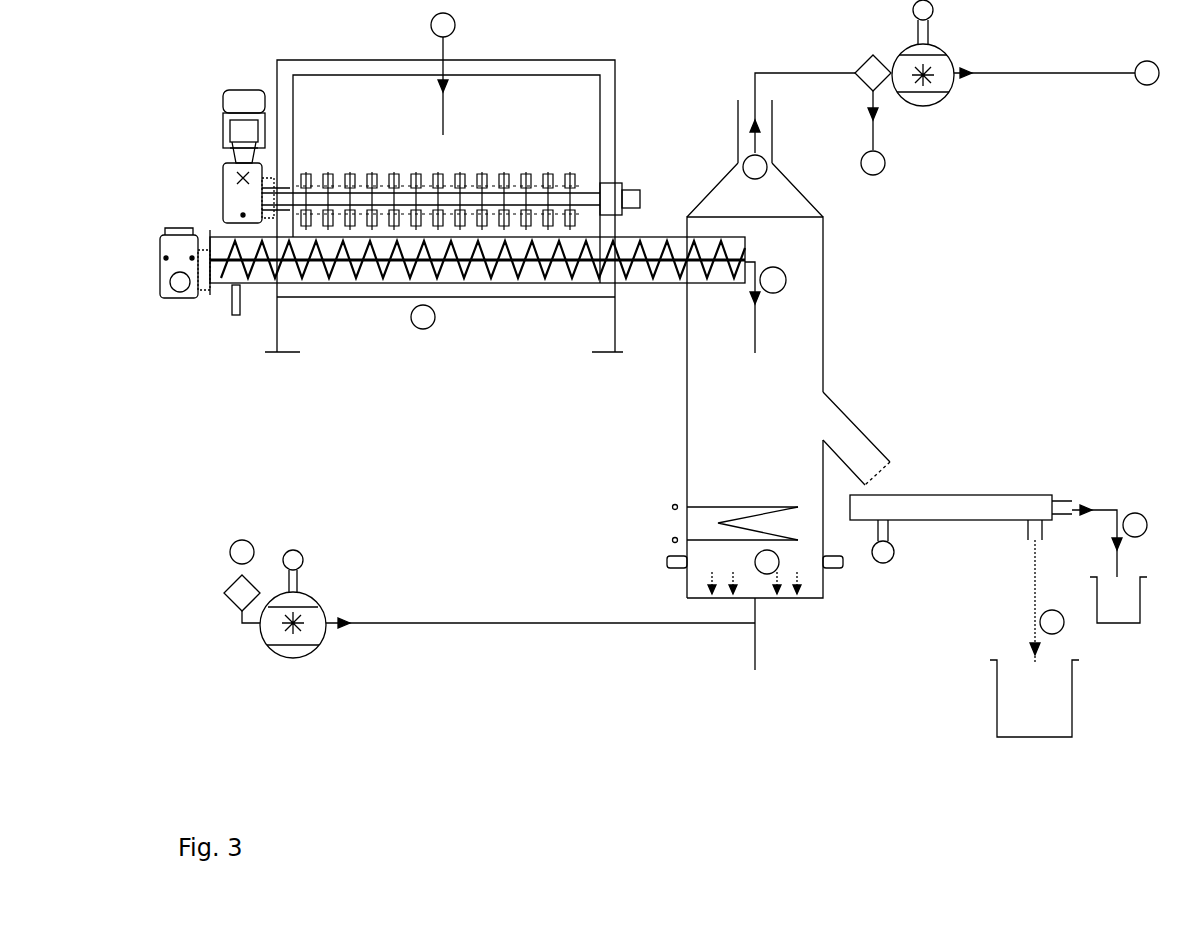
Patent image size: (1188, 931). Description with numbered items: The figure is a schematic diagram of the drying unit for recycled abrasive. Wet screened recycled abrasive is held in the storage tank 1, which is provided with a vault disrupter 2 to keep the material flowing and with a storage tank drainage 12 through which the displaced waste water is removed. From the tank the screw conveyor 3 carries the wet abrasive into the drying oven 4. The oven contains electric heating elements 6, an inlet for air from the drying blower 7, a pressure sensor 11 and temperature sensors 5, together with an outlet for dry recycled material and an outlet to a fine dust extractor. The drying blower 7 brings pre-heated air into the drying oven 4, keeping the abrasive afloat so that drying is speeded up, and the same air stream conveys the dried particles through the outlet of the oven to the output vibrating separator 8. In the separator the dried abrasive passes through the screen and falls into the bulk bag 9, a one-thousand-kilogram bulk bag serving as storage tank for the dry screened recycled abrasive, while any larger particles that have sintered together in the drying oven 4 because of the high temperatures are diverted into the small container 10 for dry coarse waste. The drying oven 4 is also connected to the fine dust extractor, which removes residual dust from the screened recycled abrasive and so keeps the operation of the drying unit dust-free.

The storage tank for wet screened recycled abrasive 1 is at (451, 182).
The vault disrupter 2 is at (239, 156).
The screw conveyor 3 is at (165, 263).
The drying oven 4 is at (761, 335).
The temperature sensor 5 is at (652, 420).
The heating elements 6 is at (736, 524).
The drying blower 7 is at (489, 599).
The output vibrating separator 8 is at (905, 508).
The bulk bag for dry screened recycled abrasive 9 is at (1044, 698).
The container for dry coarse waste 10 is at (1130, 600).
The pressure sensor 11 is at (755, 647).
The storage tank drainage 12 is at (442, 283).